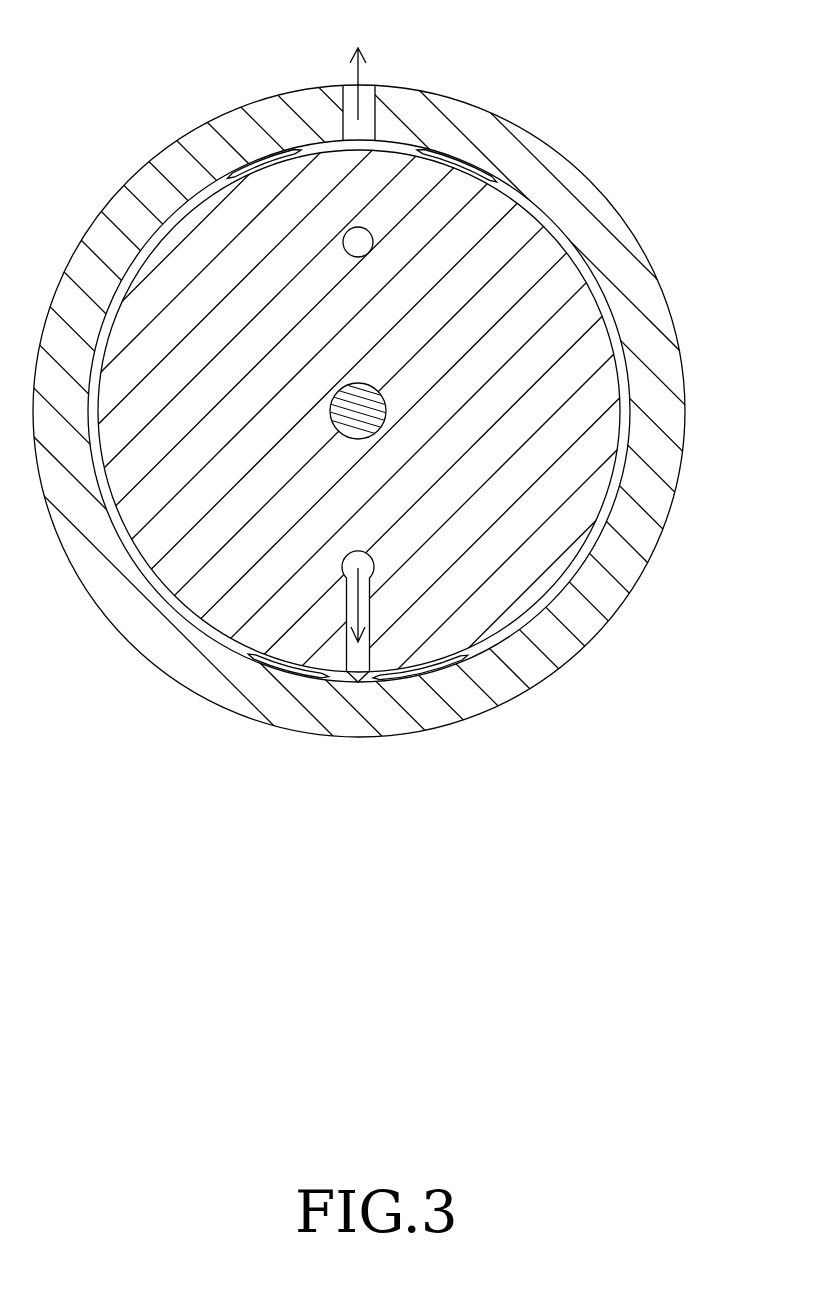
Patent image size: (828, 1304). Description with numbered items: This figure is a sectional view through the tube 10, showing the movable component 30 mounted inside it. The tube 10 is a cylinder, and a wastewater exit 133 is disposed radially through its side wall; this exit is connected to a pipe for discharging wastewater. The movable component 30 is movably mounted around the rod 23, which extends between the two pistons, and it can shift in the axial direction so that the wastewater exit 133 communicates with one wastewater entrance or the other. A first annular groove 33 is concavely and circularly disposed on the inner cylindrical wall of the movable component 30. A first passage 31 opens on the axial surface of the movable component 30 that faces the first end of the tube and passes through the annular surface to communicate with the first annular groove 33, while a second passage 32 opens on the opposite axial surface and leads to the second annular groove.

The tube 10 is at (628, 268).
The movable component 30 is at (518, 220).
The wastewater exit 133 is at (367, 85).
The second passage 32 is at (357, 233).
The rod 23 is at (378, 408).
The first passage 31 is at (358, 567).
The first annular groove 33 is at (572, 558).